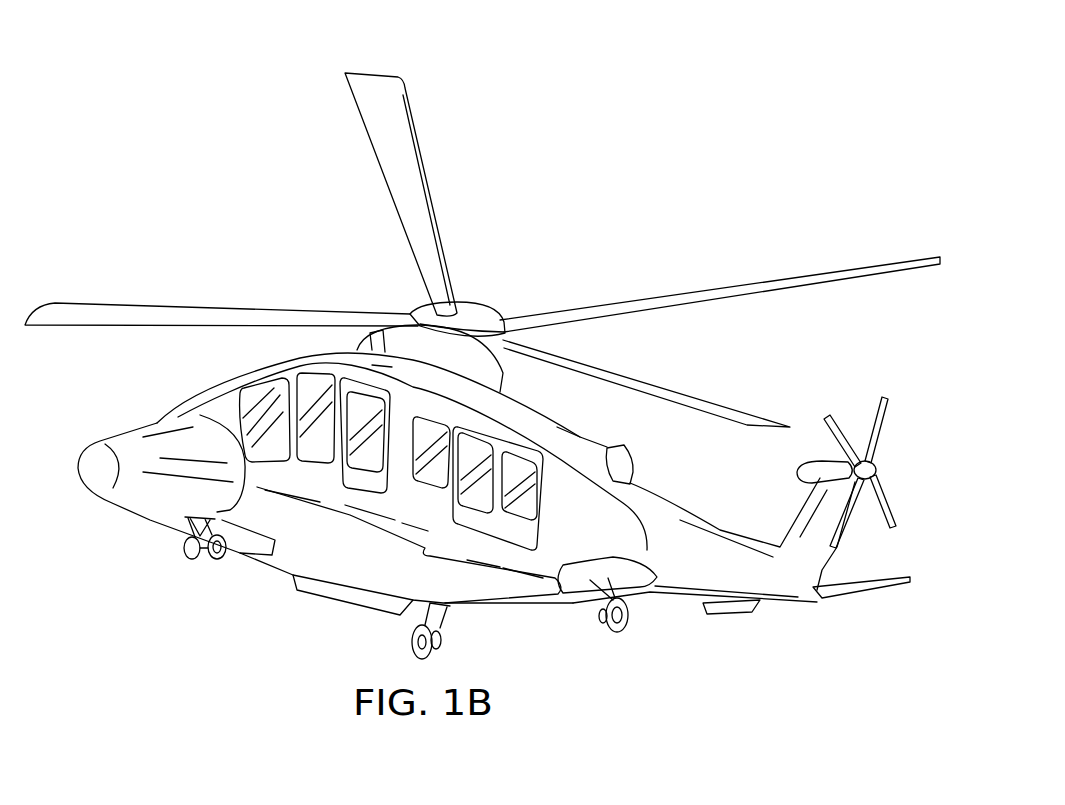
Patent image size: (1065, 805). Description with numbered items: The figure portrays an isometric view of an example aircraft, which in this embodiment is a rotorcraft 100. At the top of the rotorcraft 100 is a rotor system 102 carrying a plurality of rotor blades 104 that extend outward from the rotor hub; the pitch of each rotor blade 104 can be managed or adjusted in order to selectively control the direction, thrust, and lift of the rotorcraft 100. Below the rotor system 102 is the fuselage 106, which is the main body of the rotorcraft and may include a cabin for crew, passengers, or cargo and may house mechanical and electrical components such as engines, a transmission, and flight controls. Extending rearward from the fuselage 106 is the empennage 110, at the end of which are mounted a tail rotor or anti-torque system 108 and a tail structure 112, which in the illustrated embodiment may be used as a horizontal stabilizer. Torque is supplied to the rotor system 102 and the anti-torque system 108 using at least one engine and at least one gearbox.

The rotorcraft 100 is at (213, 73).
The rotor system 102 is at (490, 283).
The rotor blade 104 is at (707, 300).
The fuselage 106 is at (288, 557).
The tail rotor or anti-torque system 108 is at (860, 391).
The empennage 110 is at (680, 587).
The tail structure 112 is at (870, 593).